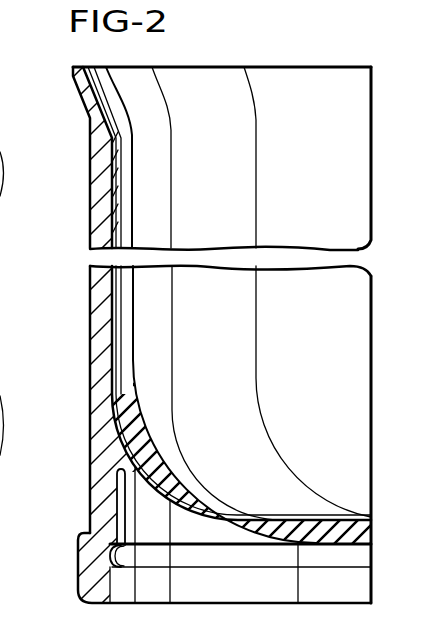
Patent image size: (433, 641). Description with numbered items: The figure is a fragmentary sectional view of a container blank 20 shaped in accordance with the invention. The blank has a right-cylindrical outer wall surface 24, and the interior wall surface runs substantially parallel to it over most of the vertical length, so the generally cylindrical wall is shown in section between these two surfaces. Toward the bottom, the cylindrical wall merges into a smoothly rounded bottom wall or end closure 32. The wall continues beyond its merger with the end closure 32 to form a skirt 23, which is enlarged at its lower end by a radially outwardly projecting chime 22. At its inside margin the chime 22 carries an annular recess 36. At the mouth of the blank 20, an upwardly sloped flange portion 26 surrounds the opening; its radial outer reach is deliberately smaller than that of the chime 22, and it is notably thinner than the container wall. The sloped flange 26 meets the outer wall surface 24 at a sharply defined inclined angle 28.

The container blank 20 is at (79, 257).
The chime 22 is at (77, 558).
The skirt 23 is at (90, 477).
The outer wall surface 24 is at (90, 348).
The flange portion 26 is at (78, 88).
The inclined angle 28 is at (91, 103).
The end closure 32 is at (306, 517).
The annular recess 36 is at (147, 560).